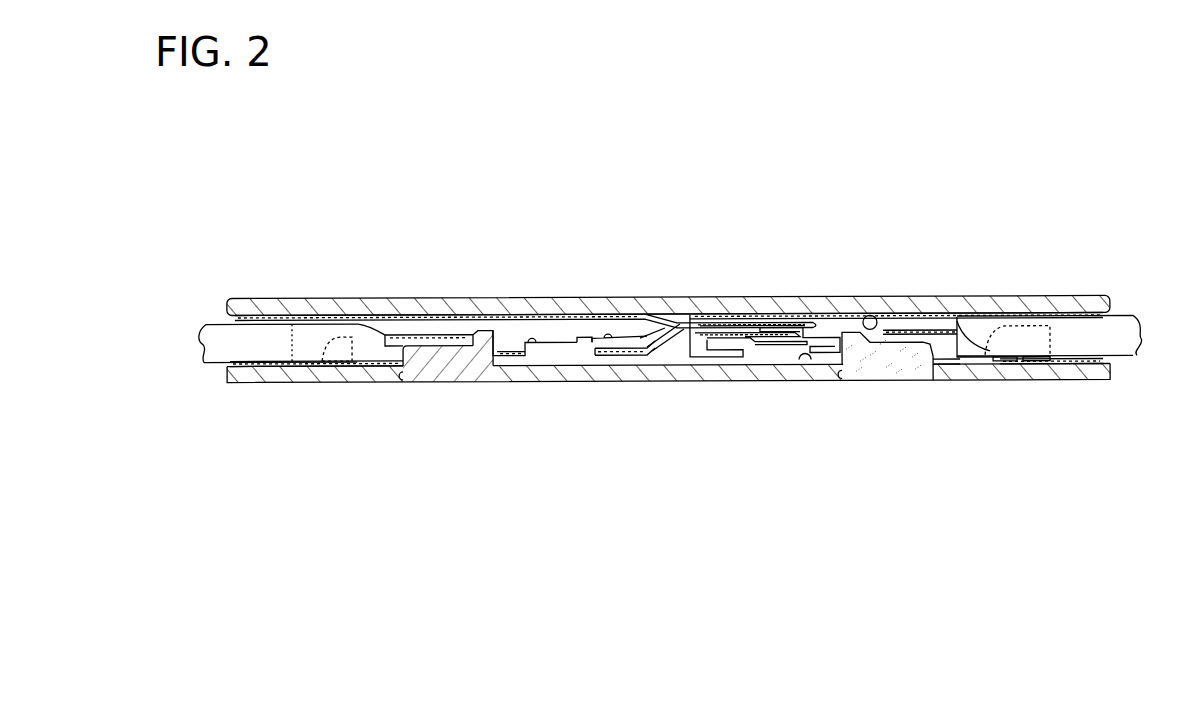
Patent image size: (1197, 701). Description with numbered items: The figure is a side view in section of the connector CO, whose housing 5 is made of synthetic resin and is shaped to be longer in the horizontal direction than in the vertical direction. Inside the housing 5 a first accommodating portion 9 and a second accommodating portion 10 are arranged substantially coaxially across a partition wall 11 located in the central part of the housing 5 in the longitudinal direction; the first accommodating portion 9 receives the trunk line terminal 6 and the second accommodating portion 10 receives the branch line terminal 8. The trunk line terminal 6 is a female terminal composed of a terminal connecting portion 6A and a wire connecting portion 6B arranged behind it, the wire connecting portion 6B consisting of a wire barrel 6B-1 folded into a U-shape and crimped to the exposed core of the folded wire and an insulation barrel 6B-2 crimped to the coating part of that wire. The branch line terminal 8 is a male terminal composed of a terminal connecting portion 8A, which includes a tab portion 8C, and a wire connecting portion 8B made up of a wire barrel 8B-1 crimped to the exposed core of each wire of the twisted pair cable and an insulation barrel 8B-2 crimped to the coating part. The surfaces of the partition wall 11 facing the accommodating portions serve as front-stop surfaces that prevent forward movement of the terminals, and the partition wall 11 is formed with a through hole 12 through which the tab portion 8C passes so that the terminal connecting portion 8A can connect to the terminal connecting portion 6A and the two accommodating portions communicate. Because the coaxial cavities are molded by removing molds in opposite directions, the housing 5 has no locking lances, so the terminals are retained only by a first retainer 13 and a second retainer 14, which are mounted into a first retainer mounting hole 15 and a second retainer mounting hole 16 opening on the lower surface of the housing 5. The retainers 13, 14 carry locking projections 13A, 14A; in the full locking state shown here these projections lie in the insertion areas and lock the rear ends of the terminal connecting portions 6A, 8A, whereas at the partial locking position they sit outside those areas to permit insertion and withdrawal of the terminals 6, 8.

The housing 5 is at (978, 298).
The connector CO is at (664, 290).
The trunk line terminal 6 is at (778, 358).
The terminal connecting portion 6A is at (822, 313).
The wire connecting portion 6B is at (893, 466).
The wire barrel 6B-1 is at (912, 340).
The insulation barrel 6B-2 is at (1000, 360).
The branch line terminal 8 is at (569, 352).
The terminal connecting portion 8A is at (613, 313).
The wire connecting portion 8B is at (445, 242).
The wire barrel 8B-1 is at (419, 340).
The insulation barrel 8B-2 is at (314, 356).
The tab portion 8C is at (782, 320).
The first accommodating portion 9 is at (805, 361).
The second accommodating portion 10 is at (538, 356).
The partition wall 11 is at (680, 357).
The through hole 12 is at (670, 331).
The first retainer 13 is at (877, 370).
The locking projection 13A is at (859, 333).
The second retainer 14 is at (453, 381).
The locking projection 14A is at (484, 329).
The first retainer mounting hole 15 is at (852, 368).
The second retainer mounting hole 16 is at (407, 386).